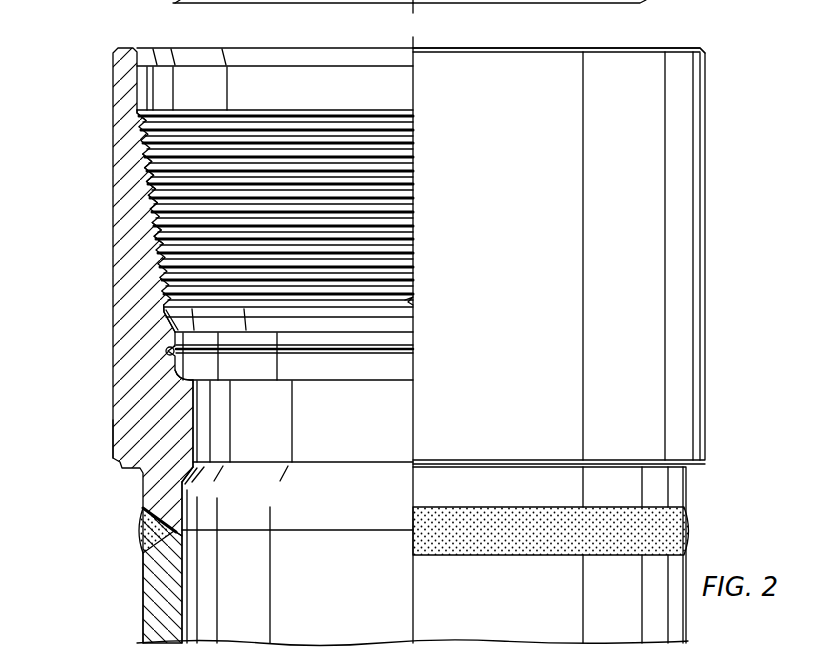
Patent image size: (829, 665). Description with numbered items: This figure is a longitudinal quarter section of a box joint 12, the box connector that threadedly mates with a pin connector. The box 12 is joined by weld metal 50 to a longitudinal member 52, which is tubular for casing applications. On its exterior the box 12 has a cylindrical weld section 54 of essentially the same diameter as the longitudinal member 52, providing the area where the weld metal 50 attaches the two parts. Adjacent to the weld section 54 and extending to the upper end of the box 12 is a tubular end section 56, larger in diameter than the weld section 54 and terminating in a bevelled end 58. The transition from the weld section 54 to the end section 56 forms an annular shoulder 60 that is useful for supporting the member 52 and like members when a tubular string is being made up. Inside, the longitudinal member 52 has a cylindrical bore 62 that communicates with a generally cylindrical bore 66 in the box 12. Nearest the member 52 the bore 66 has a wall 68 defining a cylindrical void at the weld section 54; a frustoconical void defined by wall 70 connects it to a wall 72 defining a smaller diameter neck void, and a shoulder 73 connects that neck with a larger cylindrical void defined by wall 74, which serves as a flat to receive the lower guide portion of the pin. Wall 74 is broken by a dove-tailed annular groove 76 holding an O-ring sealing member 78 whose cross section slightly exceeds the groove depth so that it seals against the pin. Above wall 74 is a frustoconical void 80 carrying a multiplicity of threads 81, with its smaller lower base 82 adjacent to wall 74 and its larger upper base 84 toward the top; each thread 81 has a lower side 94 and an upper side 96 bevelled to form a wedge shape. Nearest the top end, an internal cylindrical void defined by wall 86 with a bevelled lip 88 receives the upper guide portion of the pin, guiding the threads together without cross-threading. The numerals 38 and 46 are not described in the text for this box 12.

The box joint 12 is at (110, 535).
The upper housing member 38 is at (652, 0).
The housing flange 46 is at (190, 2).
The weld metal 50 is at (691, 527).
The longitudinal member 52 is at (143, 607).
The cylindrical weld section 54 is at (688, 490).
The tubular end section 56 is at (708, 164).
The bevelled end 58 is at (707, 48).
The annular shoulder 60 is at (124, 469).
The cylindrical bore 62 is at (324, 597).
The cylindrical bore 66 is at (383, 445).
The wall 68 is at (184, 515).
The wall 70 is at (192, 473).
The wall 72 is at (199, 428).
The shoulder 73 is at (113, 437).
The wall 74 is at (178, 382).
The annular groove 76 is at (166, 352).
The O-ring sealing member 78 is at (320, 354).
The frustoconical void 80 is at (320, 140).
The threads 81 is at (150, 238).
The lower base 82 is at (162, 308).
The upper base 84 is at (137, 118).
The wall 86 is at (140, 92).
The bevelled lip 88 is at (141, 48).
The lower side 94 is at (148, 186).
The upper side 96 is at (150, 200).